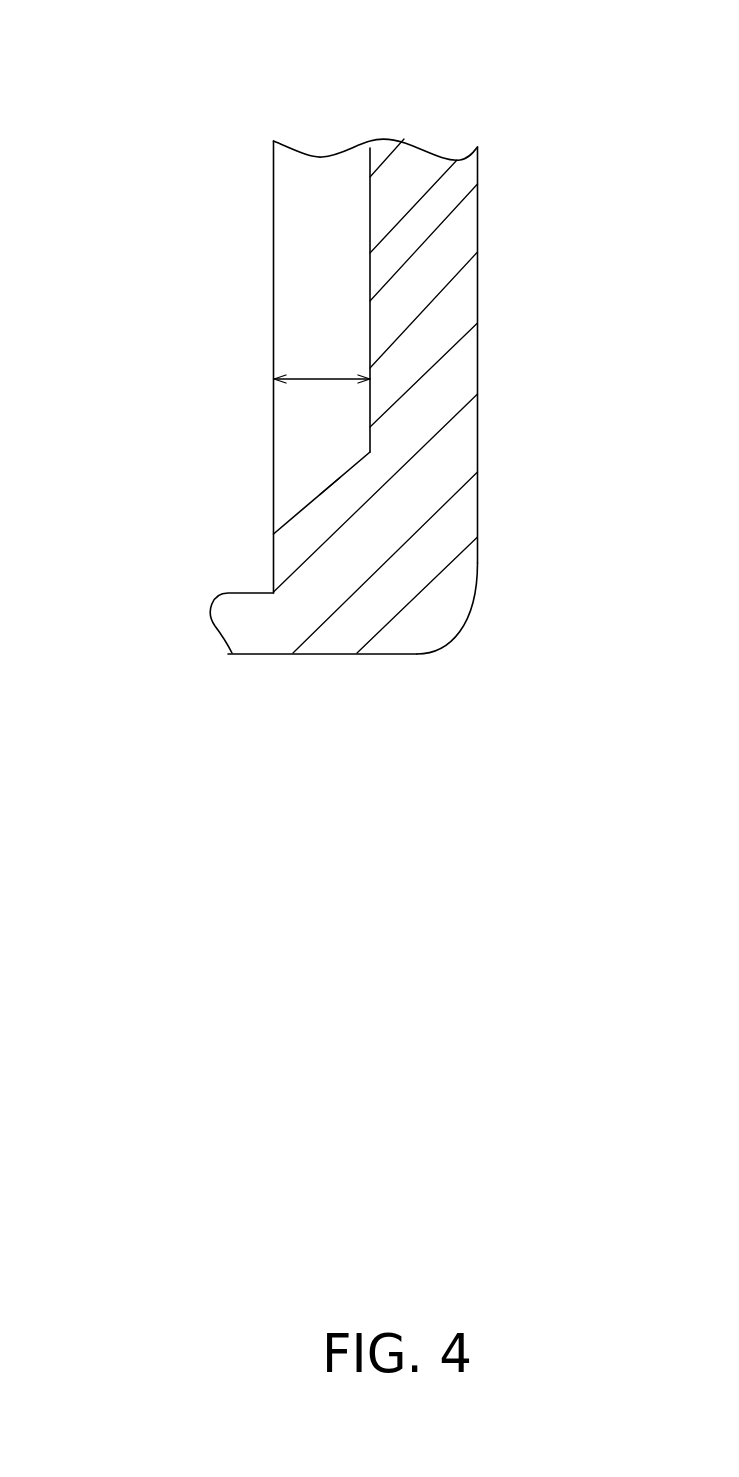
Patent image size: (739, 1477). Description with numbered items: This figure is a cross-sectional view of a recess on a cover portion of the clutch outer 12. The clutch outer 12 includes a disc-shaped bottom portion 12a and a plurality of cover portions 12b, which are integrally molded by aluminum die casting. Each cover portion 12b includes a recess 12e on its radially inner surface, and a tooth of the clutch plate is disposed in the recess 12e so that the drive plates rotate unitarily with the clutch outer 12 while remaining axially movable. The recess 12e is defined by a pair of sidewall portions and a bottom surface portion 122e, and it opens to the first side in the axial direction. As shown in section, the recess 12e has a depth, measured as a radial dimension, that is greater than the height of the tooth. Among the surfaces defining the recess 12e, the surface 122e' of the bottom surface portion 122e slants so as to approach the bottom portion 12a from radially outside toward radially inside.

The clutch outer 12 is at (190, 82).
The bottom portion 12a is at (257, 636).
The cover portion 12b is at (458, 304).
The recess 12e is at (323, 287).
The bottom surface portion 122e is at (327, 609).
The surface of the bottom surface portion 122e' is at (199, 532).